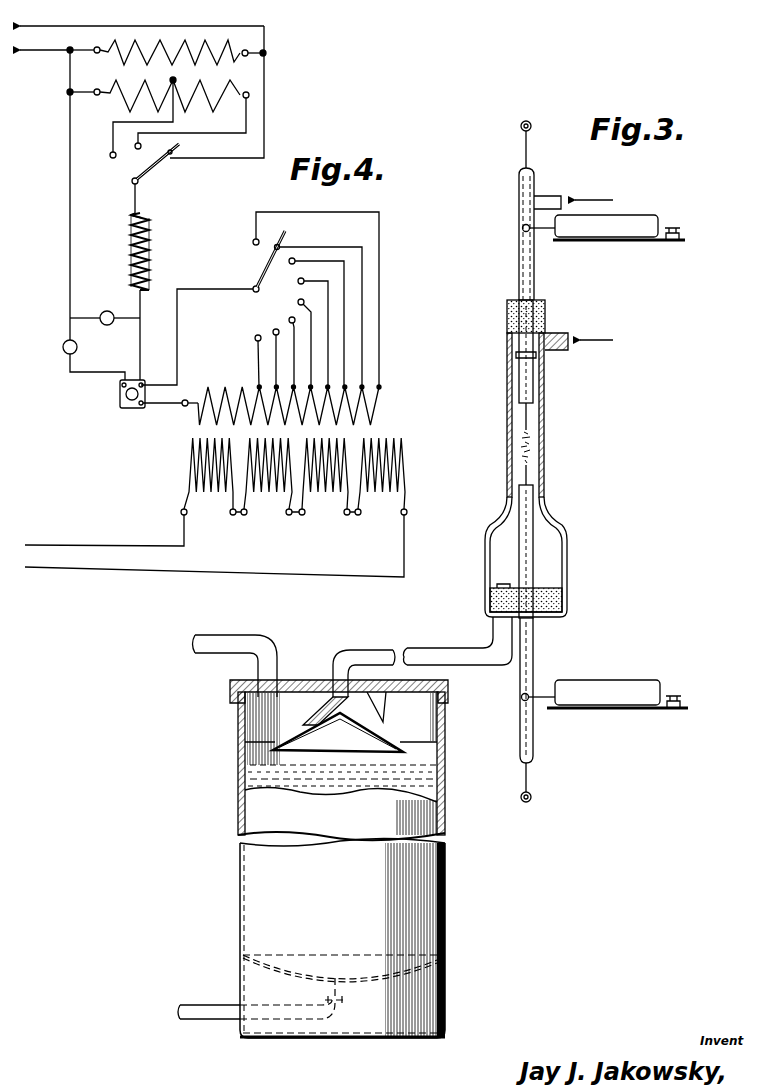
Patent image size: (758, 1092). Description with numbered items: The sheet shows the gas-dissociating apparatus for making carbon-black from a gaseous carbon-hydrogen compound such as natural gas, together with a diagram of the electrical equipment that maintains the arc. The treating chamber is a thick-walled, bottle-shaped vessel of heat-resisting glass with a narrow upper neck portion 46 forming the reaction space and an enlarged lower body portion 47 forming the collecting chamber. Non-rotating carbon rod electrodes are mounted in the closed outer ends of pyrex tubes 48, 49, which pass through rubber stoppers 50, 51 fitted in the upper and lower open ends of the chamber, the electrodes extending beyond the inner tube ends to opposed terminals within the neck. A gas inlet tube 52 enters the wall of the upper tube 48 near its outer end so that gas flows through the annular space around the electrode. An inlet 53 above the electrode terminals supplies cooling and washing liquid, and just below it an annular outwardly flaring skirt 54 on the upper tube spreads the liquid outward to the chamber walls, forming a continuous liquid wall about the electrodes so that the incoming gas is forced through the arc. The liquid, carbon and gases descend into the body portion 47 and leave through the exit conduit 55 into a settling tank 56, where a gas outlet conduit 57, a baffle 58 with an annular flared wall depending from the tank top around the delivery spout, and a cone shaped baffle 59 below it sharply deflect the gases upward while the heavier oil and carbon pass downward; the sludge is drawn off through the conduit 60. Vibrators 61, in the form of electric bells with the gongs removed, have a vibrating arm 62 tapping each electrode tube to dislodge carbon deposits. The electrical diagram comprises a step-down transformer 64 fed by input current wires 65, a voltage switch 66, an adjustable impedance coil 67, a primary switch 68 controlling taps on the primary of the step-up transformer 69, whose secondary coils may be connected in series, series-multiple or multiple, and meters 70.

In FIG. 3, the neck portion 46 is at (545, 455).
In FIG. 3, the enlarged lower body portion 47 is at (568, 563).
In FIG. 3, the upper pyrex tube 48 is at (519, 206).
In FIG. 3, the lower pyrex tube 49 is at (520, 735).
In FIG. 3, the upper rubber stopper 50 is at (537, 313).
In FIG. 3, the lower rubber stopper 51 is at (560, 603).
In FIG. 3, the gas inlet tube 52 is at (546, 204).
In FIG. 3, the liquid inlet 53 is at (564, 338).
In FIG. 3, the annular outwardly flaring skirt 54 is at (517, 354).
In FIG. 3, the exit conduit 55 is at (437, 652).
In FIG. 3, the settling tank 56 is at (430, 893).
In FIG. 3, the gas outlet conduit 57 is at (240, 636).
In FIG. 3, the baffle 58 is at (305, 705).
In FIG. 3, the cone shaped baffle 59 is at (388, 732).
In FIG. 3, the conduit 60 is at (198, 1013).
In FIG. 3, the vibrator 61 is at (636, 224).
In FIG. 3, the vibrating arm 62 is at (548, 233).
In FIG. 4, the step-down transformer 64 is at (237, 83).
In FIG. 4, the input current wires 65 is at (142, 39).
In FIG. 4, the voltage switch 66 is at (152, 168).
In FIG. 4, the adjustable impedance coil 67 is at (150, 244).
In FIG. 4, the primary switch 68 is at (262, 272).
In FIG. 4, the step-up transformer 69 is at (203, 416).
In FIG. 4, the meters 70 is at (104, 230).